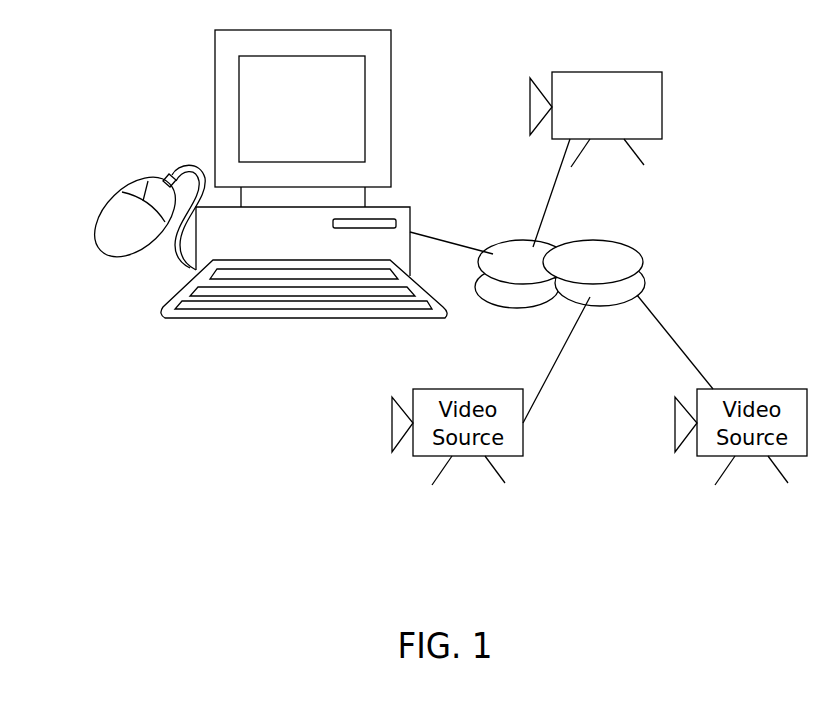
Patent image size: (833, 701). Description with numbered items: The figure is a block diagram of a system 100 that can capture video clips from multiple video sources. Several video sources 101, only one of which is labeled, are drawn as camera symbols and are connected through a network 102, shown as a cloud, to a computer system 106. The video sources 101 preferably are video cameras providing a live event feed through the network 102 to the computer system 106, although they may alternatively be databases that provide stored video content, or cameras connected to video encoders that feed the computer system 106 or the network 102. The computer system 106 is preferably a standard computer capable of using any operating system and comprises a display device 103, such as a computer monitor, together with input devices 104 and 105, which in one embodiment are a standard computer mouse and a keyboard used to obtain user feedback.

The system 100 is at (465, 691).
The video sources 101 is at (662, 75).
The network 102 is at (620, 243).
The display device 103 is at (392, 48).
The input device 104 is at (97, 228).
The input device 105 is at (165, 317).
The computer system 106 is at (177, 129).